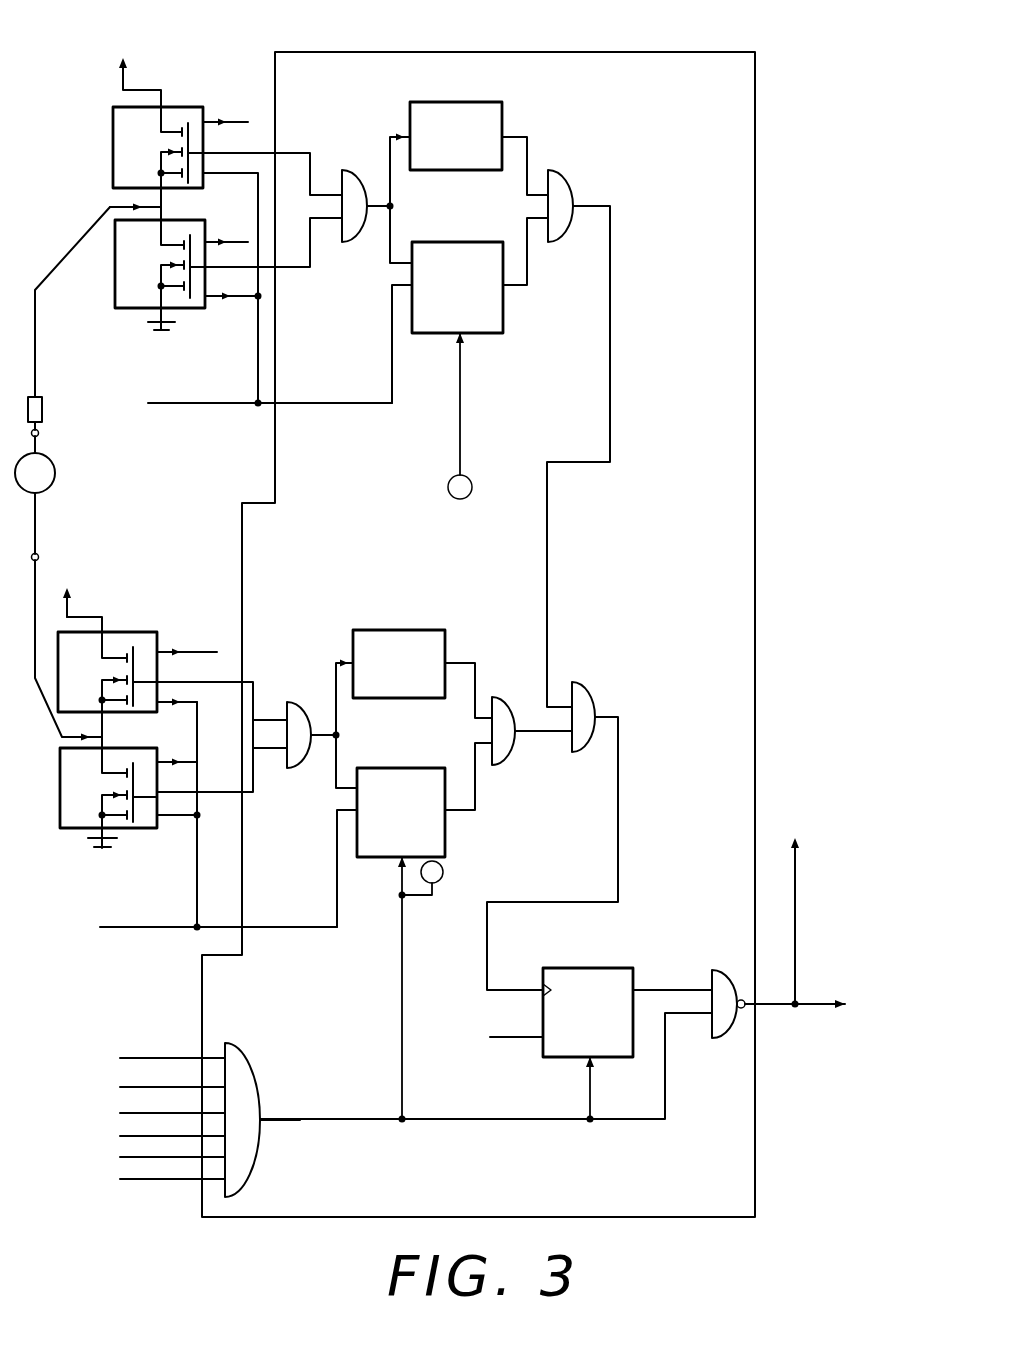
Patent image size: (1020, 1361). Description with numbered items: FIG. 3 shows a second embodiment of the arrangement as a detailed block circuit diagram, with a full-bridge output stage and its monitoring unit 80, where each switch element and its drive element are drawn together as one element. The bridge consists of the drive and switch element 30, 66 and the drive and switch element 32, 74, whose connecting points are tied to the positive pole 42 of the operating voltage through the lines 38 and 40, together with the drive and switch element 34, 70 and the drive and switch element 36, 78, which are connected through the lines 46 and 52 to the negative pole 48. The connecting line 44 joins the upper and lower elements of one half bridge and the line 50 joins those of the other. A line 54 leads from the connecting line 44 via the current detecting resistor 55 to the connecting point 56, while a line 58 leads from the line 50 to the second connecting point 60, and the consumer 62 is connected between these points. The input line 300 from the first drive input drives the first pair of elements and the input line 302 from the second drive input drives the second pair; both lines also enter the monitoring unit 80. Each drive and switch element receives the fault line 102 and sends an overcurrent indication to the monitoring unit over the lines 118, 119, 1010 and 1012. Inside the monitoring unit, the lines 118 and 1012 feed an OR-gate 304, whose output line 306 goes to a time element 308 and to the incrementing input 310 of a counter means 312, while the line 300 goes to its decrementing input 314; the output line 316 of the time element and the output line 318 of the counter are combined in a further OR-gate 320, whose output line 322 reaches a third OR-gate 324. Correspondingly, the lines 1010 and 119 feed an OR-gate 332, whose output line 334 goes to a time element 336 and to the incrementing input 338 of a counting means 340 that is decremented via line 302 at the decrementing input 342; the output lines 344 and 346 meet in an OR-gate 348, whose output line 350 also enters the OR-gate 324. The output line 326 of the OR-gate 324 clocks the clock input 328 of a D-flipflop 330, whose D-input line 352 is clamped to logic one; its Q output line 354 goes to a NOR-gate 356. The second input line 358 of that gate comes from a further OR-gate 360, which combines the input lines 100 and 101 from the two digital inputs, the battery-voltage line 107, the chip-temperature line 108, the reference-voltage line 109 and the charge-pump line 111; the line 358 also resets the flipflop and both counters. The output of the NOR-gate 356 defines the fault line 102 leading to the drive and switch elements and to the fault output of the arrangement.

The switch element 30 is at (179, 122).
The drive element 66 is at (178, 107).
The switch element 36 is at (186, 248).
The drive element 78 is at (185, 215).
The switch element 32 is at (187, 646).
The drive element 74 is at (160, 632).
The switch element 34 is at (118, 774).
The drive element 70 is at (118, 774).
The line 38 is at (133, 88).
The line 40 is at (100, 617).
The positive pole 42 is at (76, 576).
The connecting line 44 is at (130, 203).
The line 46 is at (175, 328).
The negative pole 48 is at (163, 324).
The line 50 is at (102, 735).
The line 52 is at (110, 840).
The line 54 is at (72, 247).
The current detecting resistor 55 is at (42, 399).
The connecting point 56 is at (39, 434).
The line 58 is at (38, 713).
The connecting point 60 is at (40, 556).
The consumer 62 is at (56, 474).
The monitoring unit 80 is at (755, 52).
The fault line 102 is at (228, 124).
The line 118 is at (270, 154).
The line 119 is at (213, 793).
The line 1012 is at (234, 288).
The line 1010 is at (184, 683).
The input line 300 is at (198, 406).
The input line 302 is at (140, 930).
The OR-gate 304 is at (347, 170).
The output line 306 is at (375, 225).
The time element 308 is at (502, 103).
The incrementing input 310 is at (398, 248).
The counter means 312 is at (490, 242).
The decrementing input 314 is at (396, 300).
The output line 316 is at (527, 137).
The output line 318 is at (527, 272).
The OR-gate 320 is at (565, 180).
The output line 322 is at (610, 328).
The OR-gate 324 is at (585, 690).
The output line 326 is at (618, 798).
The clock input 328 is at (543, 983).
The D-flipflop 330 is at (626, 968).
The OR-gate 332 is at (298, 702).
The output line 334 is at (320, 745).
The time element 336 is at (436, 630).
The incrementing input 338 is at (344, 785).
The counting means 340 is at (438, 768).
The decrementing input 342 is at (343, 828).
The output line 344 is at (475, 663).
The output line 346 is at (475, 796).
The OR-gate 348 is at (504, 706).
The output line 350 is at (541, 733).
The line 352 is at (515, 1039).
The output line 354 is at (676, 990).
The NOR-gate 356 is at (730, 972).
The input line 358 is at (462, 408).
The OR-gate 360 is at (235, 1052).
The input line 100 is at (148, 1058).
The input line 101 is at (149, 1087).
The line 109 is at (149, 1113).
The input line 107 is at (149, 1136).
The line 111 is at (158, 1160).
The line 108 is at (158, 1182).